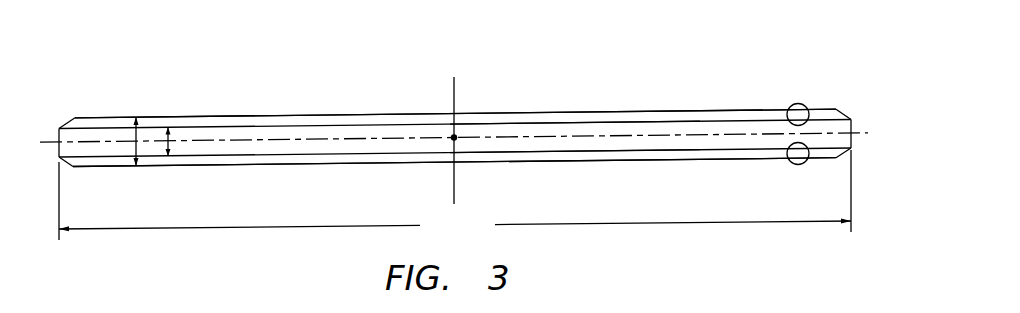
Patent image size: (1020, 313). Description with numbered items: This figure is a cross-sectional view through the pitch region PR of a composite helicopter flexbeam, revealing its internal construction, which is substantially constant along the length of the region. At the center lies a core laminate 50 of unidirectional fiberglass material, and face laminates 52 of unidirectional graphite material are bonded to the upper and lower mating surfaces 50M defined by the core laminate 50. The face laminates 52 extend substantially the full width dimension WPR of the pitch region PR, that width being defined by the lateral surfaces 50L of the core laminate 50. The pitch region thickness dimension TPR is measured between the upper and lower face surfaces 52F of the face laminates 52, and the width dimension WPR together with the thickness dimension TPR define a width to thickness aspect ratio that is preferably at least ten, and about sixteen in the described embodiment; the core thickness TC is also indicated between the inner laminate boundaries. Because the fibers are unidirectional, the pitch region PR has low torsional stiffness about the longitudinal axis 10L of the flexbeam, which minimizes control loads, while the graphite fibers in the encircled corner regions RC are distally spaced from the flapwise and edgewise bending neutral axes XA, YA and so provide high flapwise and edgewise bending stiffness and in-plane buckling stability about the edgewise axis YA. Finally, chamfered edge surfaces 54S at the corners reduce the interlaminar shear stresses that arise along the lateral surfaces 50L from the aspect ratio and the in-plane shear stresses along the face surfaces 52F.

The pitch region PR is at (461, 121).
The core laminate 50 is at (425, 153).
The lateral surfaces 50L is at (865, 158).
The mating surfaces 50M is at (574, 121).
The face laminates 52 is at (337, 113).
The face surfaces 52F is at (226, 116).
The chamfered edge surfaces 54S is at (841, 158).
The longitudinal axis 10L is at (453, 138).
The flapwise bending neutral axis XA is at (857, 133).
The edgewise bending neutral axis YA is at (456, 98).
The pitch region thickness dimension TPR is at (140, 138).
The core thickness TC is at (190, 139).
The encircled regions RC is at (777, 172).
The width dimension WPR is at (455, 196).